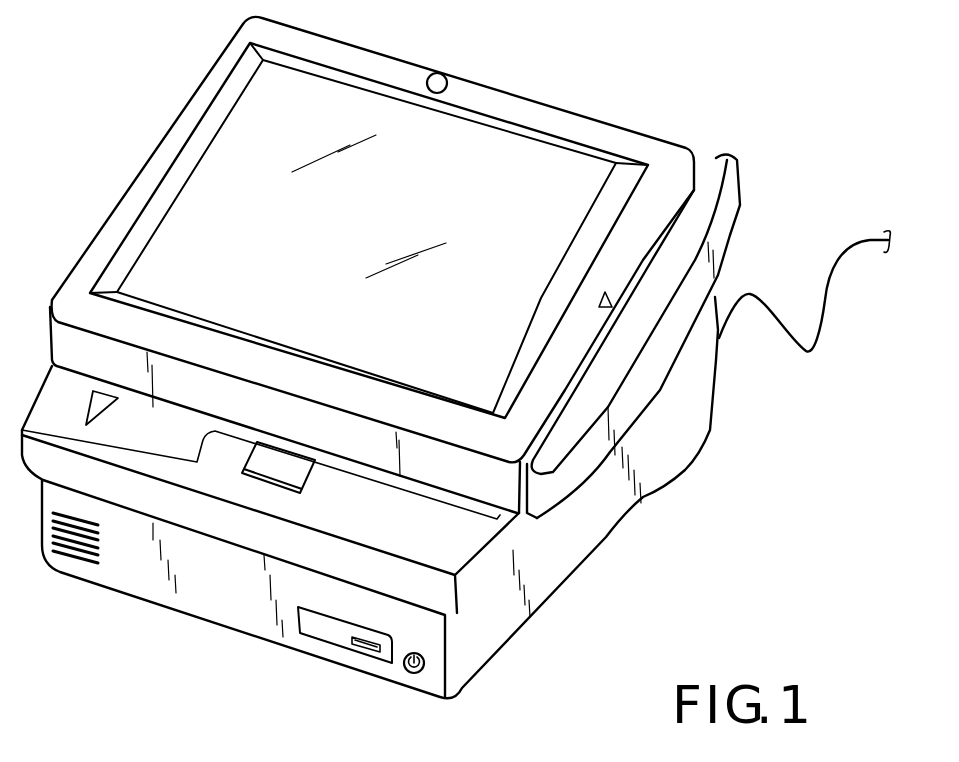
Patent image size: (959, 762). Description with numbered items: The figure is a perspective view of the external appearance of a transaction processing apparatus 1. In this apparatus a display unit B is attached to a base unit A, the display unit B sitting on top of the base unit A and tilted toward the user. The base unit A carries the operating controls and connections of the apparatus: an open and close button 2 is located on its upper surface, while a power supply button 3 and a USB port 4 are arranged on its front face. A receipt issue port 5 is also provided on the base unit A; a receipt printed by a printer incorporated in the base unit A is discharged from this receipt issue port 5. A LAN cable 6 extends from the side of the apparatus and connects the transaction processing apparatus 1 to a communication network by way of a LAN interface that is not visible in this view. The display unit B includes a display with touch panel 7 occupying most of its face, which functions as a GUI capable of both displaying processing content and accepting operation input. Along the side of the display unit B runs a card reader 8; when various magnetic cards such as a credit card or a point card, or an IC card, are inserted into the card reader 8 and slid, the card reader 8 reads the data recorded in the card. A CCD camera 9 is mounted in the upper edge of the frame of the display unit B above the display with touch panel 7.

The transaction processing apparatus 1 is at (712, 151).
The open and close button 2 is at (296, 476).
The power supply button 3 is at (426, 665).
The USB port 4 is at (362, 640).
The receipt issue port 5 is at (118, 421).
The LAN cable 6 is at (806, 353).
The display with touch panel 7 is at (376, 100).
The card reader 8 is at (668, 218).
The CCD camera 9 is at (438, 78).
The base unit A is at (673, 462).
The display unit B is at (613, 136).